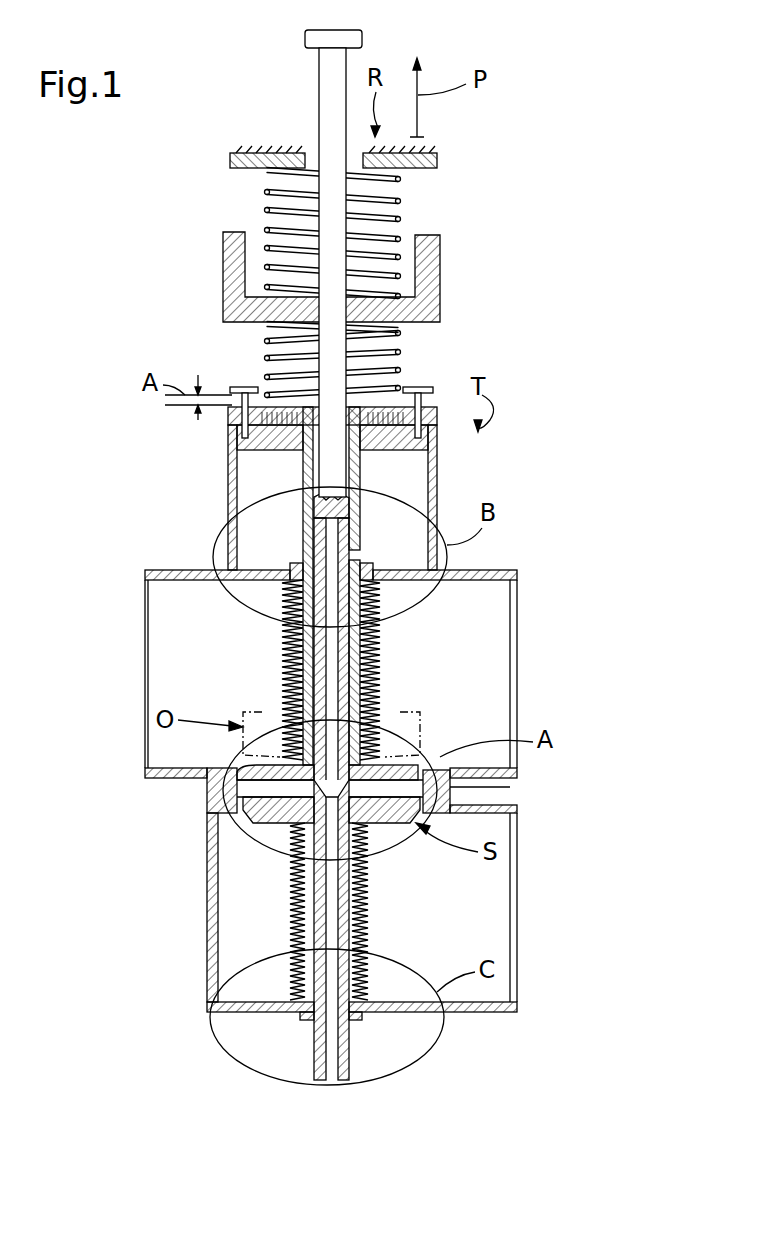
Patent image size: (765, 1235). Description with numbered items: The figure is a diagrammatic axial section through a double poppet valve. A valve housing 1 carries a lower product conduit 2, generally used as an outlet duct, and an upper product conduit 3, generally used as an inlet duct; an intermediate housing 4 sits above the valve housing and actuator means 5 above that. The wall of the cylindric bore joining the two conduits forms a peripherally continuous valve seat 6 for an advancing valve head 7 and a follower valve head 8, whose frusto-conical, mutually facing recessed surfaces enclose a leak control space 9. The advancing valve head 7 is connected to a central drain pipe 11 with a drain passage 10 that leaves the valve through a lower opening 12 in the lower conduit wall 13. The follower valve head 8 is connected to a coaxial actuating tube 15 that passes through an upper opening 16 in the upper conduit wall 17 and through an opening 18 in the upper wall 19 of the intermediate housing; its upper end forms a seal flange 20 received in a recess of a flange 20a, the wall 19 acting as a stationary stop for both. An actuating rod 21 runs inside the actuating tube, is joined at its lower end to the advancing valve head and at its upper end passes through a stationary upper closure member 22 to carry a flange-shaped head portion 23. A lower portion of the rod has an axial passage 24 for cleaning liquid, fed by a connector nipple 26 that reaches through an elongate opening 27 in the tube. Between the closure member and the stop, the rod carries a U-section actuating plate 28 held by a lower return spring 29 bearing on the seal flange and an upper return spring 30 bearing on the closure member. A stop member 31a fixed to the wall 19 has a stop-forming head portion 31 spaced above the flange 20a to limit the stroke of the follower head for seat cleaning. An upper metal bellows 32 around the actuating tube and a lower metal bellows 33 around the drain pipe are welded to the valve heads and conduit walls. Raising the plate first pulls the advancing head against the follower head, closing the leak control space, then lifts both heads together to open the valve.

The valve housing 1 is at (215, 800).
The lower product conduit 2 is at (399, 933).
The upper product conduit 3 is at (317, 669).
The intermediate housing 4 is at (228, 497).
The actuator means 5 is at (508, 222).
The valve seat 6 is at (243, 770).
The advancing valve head 7 is at (265, 825).
The follower valve head 8 is at (430, 768).
The leak control space 9 is at (452, 790).
The drain passage 10 is at (330, 1042).
The drain pipe 11 is at (358, 906).
The lower opening 12 is at (310, 1027).
The lower conduit wall 13 is at (500, 1012).
The actuating tube 15 is at (310, 666).
The upper opening 16 is at (295, 556).
The upper conduit wall 17 is at (172, 572).
The opening 18 is at (303, 452).
The upper wall 19 is at (430, 440).
The seal flange 20 is at (300, 412).
The flange 20a is at (232, 422).
The actuating rod 21 is at (368, 634).
The upper closure member 22 is at (237, 168).
The head portion 23 is at (355, 40).
The axial passage 24 is at (342, 674).
The connector nipple 26 is at (360, 513).
The elongate opening 27 is at (357, 538).
The actuating plate 28 is at (432, 268).
The lower return spring 29 is at (400, 360).
The upper return spring 30 is at (400, 200).
The stop-forming head portion 31 is at (425, 392).
The stop member 31a is at (432, 402).
The upper metal bellows 32 is at (290, 630).
The lower metal bellows 33 is at (297, 906).